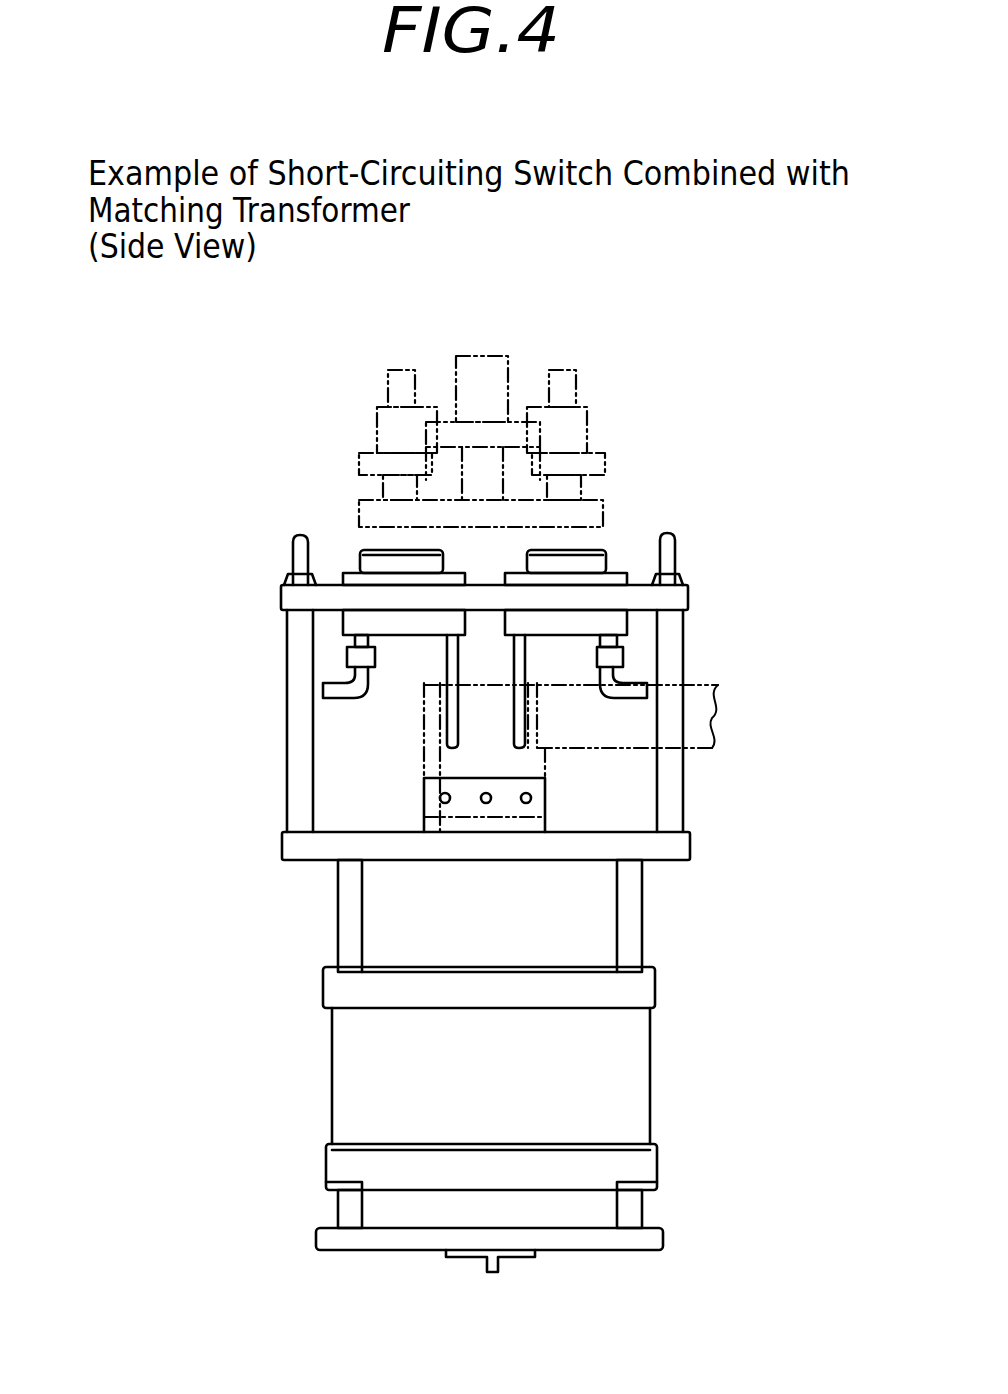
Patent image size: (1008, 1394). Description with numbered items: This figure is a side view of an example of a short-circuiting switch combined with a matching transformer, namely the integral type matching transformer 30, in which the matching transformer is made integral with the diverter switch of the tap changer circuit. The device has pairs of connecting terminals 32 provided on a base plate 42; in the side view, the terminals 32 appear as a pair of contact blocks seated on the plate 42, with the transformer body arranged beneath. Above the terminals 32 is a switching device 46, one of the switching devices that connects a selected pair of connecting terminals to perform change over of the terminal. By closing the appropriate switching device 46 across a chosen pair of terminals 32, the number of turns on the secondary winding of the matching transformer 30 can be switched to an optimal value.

The integral type matching transformer 30 is at (750, 557).
The connecting terminals 32 is at (378, 548).
The base plate 42 is at (673, 602).
The switching device 46 is at (503, 357).